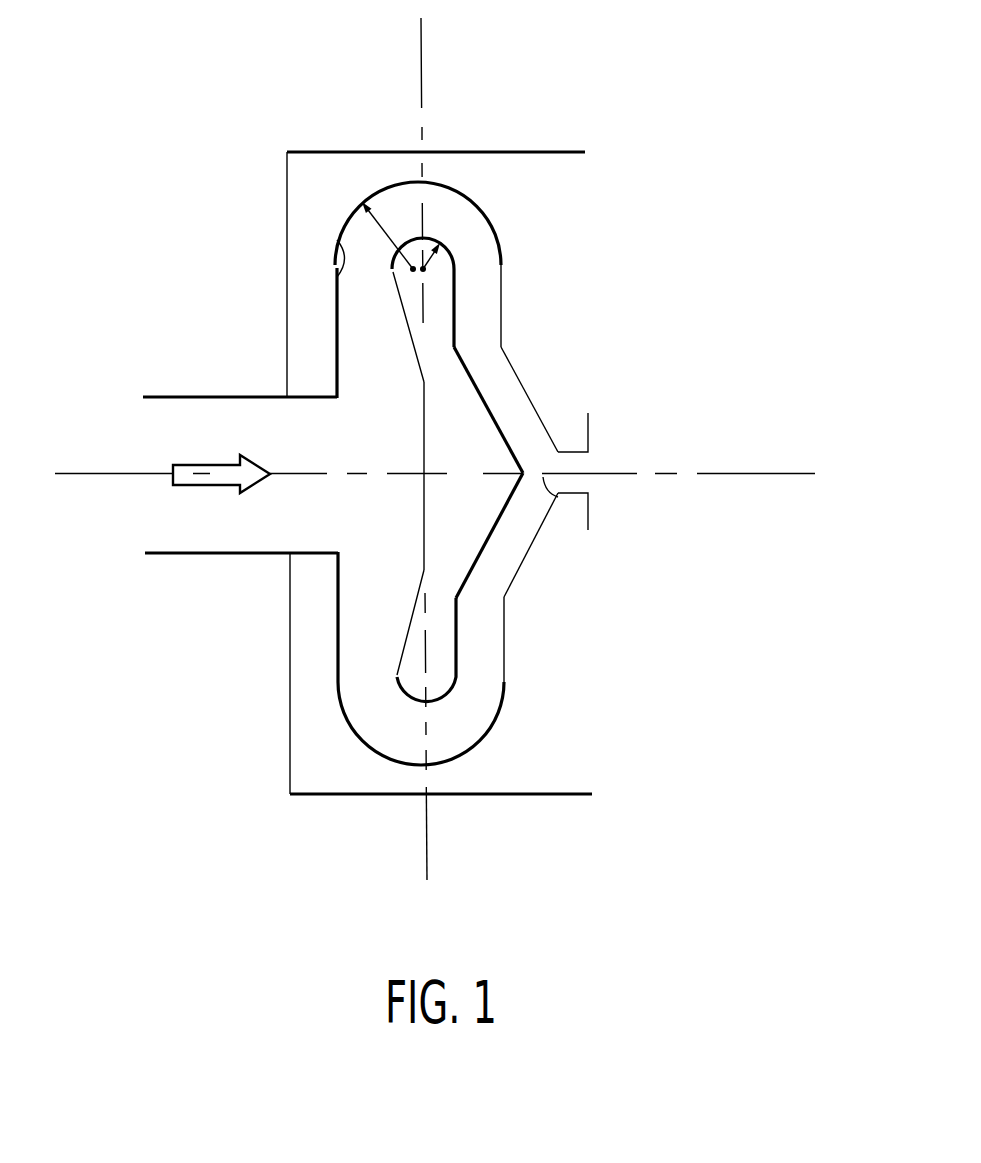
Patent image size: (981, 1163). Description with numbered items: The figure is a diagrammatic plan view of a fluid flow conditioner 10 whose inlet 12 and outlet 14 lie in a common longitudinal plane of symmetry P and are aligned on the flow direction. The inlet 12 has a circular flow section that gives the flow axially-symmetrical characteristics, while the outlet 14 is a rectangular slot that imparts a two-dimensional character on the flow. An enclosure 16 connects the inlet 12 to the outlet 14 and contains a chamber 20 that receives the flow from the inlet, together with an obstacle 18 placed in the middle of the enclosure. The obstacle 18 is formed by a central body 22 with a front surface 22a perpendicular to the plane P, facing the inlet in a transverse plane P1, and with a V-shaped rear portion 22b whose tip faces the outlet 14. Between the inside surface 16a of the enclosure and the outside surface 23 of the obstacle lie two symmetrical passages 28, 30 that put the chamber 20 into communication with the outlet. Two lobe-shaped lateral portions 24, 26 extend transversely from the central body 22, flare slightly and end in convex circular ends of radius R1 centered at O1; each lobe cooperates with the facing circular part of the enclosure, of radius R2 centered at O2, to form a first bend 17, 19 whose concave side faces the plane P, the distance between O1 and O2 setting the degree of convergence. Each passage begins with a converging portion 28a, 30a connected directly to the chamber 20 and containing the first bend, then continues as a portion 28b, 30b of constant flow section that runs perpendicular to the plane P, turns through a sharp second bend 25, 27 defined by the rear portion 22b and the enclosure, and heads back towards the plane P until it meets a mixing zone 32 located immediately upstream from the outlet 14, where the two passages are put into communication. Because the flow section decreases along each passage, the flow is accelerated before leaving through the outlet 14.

The fluid flow conditioner 10 is at (576, 332).
The inlet 12 is at (318, 542).
The outlet 14 is at (582, 463).
The enclosure 16 is at (466, 182).
The inside surface of the enclosure 16a is at (337, 240).
The first bend 17 is at (435, 747).
The obstacle 18 is at (512, 527).
The first bend 19 is at (428, 207).
The chamber 20 is at (373, 438).
The central body 22 is at (460, 430).
The front surface 22a is at (420, 418).
The rear portion 22b is at (487, 447).
The outside surface of the obstacle 23 is at (503, 682).
The lateral portion 24 is at (415, 668).
The second bend 25 is at (480, 602).
The lateral portion 26 is at (404, 243).
The second bend 27 is at (478, 347).
The passage 28 is at (360, 678).
The converging portion 28a is at (368, 612).
The portion of constant flow section 28b is at (487, 625).
The passage 30 is at (353, 307).
The converging portion 30a is at (370, 345).
The portion of constant flow section 30b is at (482, 327).
The mixing zone 32 is at (560, 497).
The longitudinal plane of symmetry P is at (449, 474).
The transverse plane P1 is at (434, 859).
The center of the lobe end circle O1 is at (488, 228).
The center of the enclosure bend circle O2 is at (411, 270).
The radius of the lobe end R1 is at (446, 242).
The radius of the enclosure bend R2 is at (373, 218).